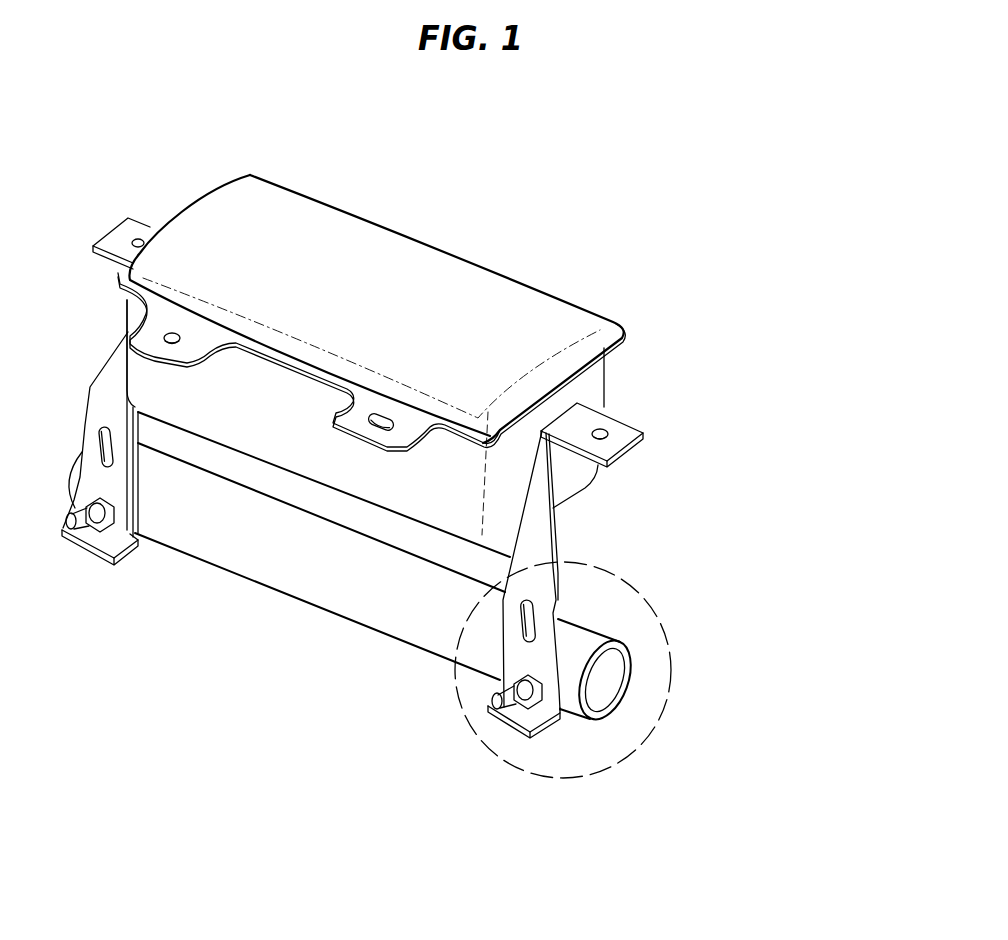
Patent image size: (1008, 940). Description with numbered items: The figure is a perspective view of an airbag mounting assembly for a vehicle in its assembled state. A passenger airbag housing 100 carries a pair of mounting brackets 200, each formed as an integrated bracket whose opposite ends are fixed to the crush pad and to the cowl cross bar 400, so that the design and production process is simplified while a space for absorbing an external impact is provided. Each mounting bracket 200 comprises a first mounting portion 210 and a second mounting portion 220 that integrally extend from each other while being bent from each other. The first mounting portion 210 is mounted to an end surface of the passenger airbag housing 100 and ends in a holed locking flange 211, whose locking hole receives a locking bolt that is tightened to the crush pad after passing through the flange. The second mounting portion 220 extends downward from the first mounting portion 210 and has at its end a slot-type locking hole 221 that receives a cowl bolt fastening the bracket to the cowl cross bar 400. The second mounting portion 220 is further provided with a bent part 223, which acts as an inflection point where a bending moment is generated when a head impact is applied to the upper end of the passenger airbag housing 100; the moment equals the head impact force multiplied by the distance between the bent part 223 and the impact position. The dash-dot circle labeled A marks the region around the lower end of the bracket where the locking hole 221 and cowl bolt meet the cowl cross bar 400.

The passenger airbag housing 100 is at (232, 420).
The mounting bracket 200 is at (471, 533).
The first mounting portion 210 is at (556, 448).
The locking flange 211 is at (603, 432).
The second mounting portion 220 is at (485, 540).
The locking hole 221 is at (521, 731).
The bent part 223 is at (500, 603).
The cowl cross bar 400 is at (278, 566).
The detail region A is at (667, 712).